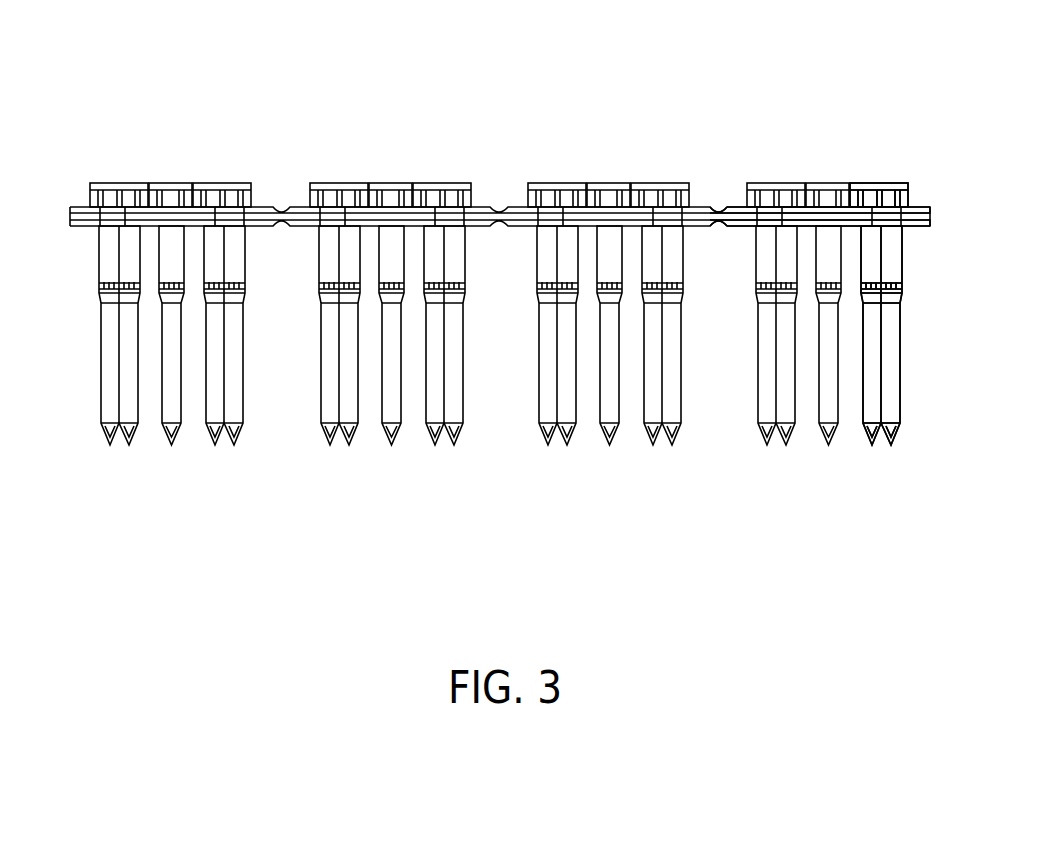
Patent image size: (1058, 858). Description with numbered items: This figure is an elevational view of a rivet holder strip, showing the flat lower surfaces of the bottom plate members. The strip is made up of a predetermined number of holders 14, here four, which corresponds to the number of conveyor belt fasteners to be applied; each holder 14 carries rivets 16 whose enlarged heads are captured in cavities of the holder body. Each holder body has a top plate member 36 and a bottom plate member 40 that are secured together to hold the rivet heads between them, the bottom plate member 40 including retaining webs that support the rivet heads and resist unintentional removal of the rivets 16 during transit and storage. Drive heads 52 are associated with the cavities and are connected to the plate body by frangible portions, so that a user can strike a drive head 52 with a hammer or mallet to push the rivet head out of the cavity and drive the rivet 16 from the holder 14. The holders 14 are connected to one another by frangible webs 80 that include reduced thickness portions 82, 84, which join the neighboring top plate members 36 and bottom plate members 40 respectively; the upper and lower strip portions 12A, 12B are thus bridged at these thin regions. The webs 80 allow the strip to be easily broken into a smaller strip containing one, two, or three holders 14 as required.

The upper carrier strip 12A is at (300, 207).
The lower carrier strip 12B is at (300, 227).
The holder 14 is at (702, 207).
The rivet 16 is at (888, 405).
The top plate member 36 is at (925, 207).
The bottom plate member 40 is at (913, 222).
The drive head 52 is at (868, 184).
The web 80 is at (694, 262).
The reduced thickness portion 82 is at (720, 207).
The reduced thickness portion 84 is at (722, 228).